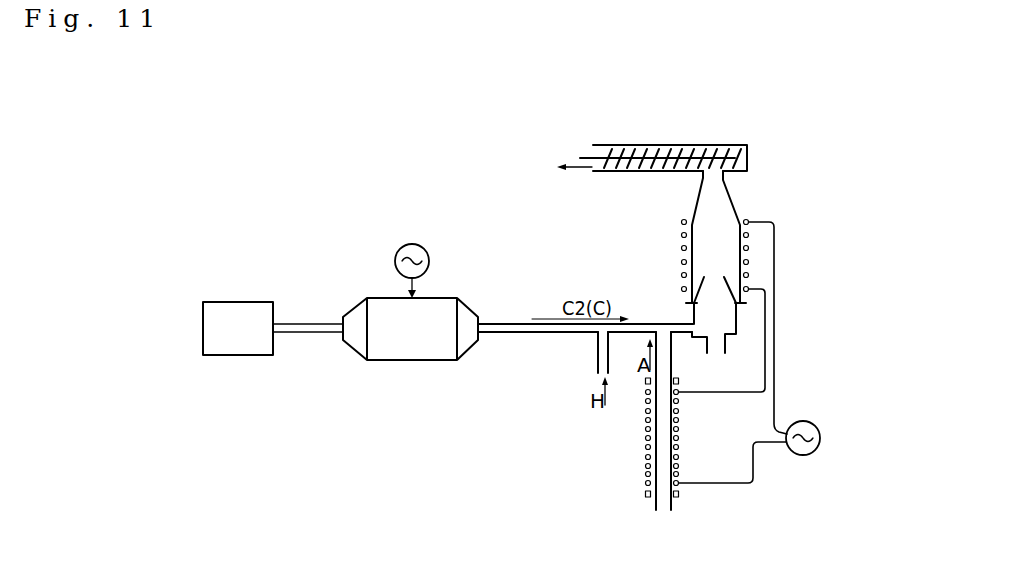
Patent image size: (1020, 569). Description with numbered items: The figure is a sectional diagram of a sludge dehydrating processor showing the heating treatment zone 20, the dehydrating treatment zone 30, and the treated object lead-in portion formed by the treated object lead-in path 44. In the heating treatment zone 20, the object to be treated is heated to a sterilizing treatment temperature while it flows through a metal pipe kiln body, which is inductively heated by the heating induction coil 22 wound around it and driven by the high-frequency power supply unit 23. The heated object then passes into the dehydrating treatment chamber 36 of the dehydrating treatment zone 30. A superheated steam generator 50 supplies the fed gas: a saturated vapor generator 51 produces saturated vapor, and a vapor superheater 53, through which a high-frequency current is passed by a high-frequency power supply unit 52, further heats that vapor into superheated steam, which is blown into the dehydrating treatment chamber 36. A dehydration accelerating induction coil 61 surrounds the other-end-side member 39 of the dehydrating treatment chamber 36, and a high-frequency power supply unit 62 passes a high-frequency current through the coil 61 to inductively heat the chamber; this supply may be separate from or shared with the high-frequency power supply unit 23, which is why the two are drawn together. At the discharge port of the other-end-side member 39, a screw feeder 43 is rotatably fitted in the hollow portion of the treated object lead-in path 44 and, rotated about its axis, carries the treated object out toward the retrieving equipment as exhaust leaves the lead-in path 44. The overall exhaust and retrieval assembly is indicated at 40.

The heating treatment zone 20 is at (548, 460).
The heating induction coil 22 is at (645, 466).
The high-frequency power supply unit 23 is at (821, 433).
The dehydrating treatment zone 30 is at (821, 247).
The dehydrating treatment chamber 36 is at (714, 315).
The other-end-side member 39 is at (734, 198).
The exhaust / filter unit 40 is at (502, 142).
The screw feeder 43 is at (583, 158).
The treated object lead-in path 44 is at (748, 148).
The superheated steam generator 50 is at (307, 209).
The saturated vapor generator 51 is at (244, 302).
The high-frequency power supply unit 52 is at (395, 261).
The vapor superheater 53 is at (444, 298).
The dehydration accelerating induction coil 61 is at (681, 262).
The high-frequency power supply unit 62 is at (803, 438).